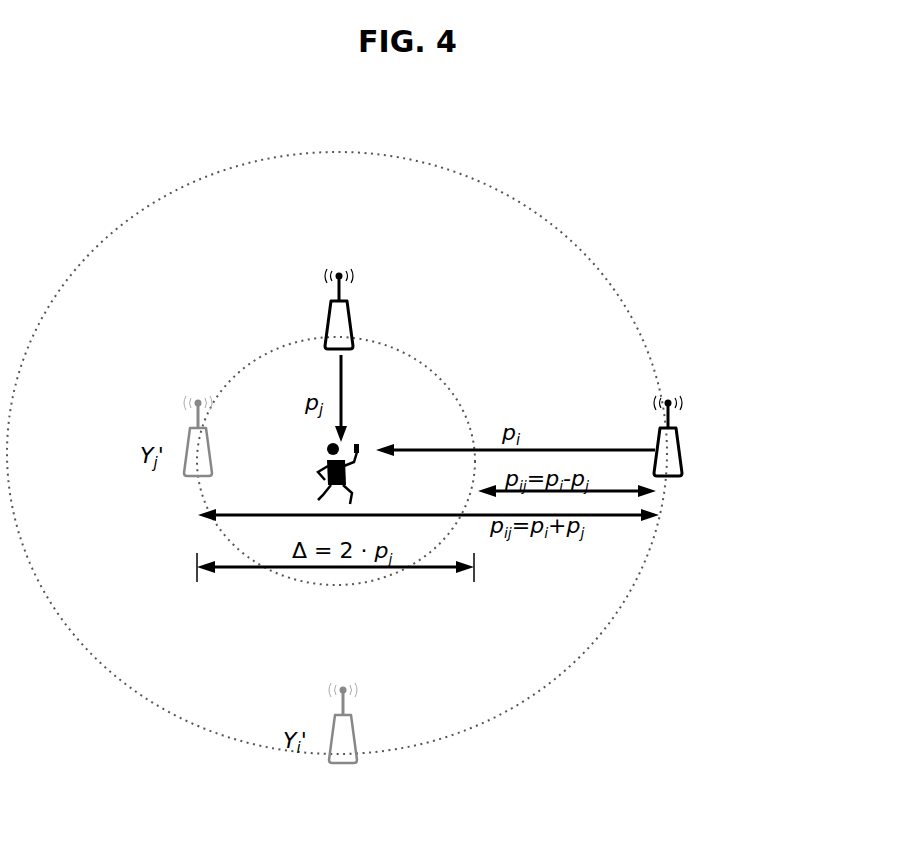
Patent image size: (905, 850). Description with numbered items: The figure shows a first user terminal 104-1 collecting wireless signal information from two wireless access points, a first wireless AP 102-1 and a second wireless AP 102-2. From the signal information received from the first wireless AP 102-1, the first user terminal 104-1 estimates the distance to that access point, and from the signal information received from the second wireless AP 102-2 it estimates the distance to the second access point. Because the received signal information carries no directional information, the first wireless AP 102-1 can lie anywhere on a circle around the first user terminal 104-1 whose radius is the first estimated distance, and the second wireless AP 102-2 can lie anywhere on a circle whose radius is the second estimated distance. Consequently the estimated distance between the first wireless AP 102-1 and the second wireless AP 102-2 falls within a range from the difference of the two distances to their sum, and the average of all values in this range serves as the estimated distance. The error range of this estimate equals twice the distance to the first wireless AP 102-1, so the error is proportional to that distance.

The first wireless AP 102-1 is at (352, 316).
The second wireless AP 102-2 is at (678, 432).
The first user terminal 104-1 is at (352, 441).